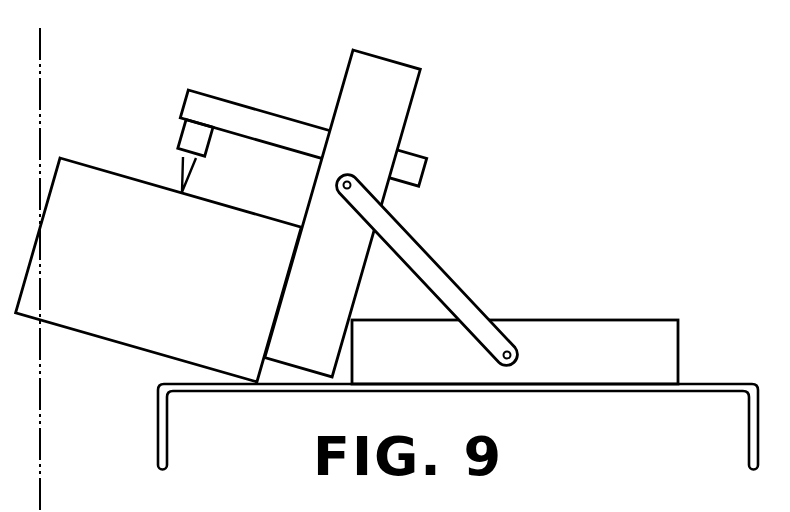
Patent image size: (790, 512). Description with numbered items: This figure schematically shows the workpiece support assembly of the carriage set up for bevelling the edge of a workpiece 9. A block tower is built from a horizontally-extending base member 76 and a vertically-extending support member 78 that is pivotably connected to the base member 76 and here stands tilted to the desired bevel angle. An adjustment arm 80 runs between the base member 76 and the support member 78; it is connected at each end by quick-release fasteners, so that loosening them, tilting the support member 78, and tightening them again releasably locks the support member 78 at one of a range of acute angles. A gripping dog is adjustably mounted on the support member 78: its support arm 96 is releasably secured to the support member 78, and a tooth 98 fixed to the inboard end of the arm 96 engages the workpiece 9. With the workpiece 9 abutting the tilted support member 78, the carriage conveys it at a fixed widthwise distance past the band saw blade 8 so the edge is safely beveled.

The band saw blade 8 is at (44, 72).
The block 9 is at (92, 180).
The horizontally-extending base member 76 is at (587, 338).
The vertically-extending support member 78 is at (402, 90).
The adjustment arm 80 is at (427, 268).
The support arm 96 is at (226, 108).
The tooth 98 is at (197, 136).